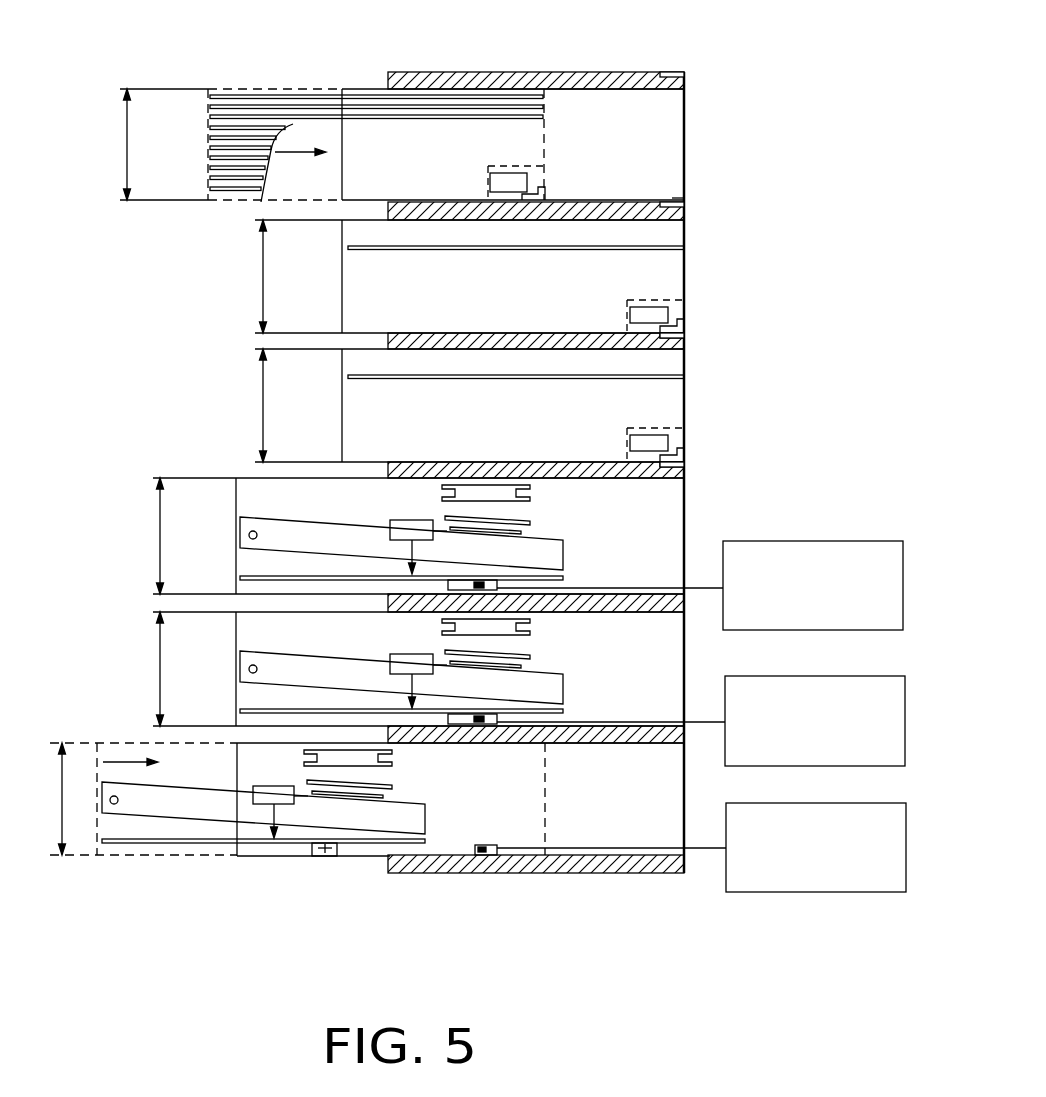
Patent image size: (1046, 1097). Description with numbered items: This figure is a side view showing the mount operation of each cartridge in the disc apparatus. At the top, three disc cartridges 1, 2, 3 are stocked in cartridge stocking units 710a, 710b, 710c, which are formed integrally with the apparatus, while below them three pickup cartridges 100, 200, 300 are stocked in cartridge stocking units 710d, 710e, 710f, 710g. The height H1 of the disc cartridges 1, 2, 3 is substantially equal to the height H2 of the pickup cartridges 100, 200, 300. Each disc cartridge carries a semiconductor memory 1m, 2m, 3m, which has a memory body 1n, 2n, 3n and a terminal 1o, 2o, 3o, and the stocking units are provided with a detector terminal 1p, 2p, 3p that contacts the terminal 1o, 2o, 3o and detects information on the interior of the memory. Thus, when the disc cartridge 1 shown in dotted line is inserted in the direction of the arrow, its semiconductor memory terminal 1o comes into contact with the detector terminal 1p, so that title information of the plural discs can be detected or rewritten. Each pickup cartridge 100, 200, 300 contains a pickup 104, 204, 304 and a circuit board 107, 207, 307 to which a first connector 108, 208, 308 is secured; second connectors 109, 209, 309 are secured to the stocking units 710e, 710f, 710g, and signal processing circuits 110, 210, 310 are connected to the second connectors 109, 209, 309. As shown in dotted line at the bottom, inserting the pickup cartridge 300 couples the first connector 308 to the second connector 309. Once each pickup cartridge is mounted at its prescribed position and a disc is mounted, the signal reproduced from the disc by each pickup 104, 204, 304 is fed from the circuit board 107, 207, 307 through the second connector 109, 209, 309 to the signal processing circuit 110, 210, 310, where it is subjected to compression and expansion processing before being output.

The disc cartridge 1 is at (282, 88).
The memory body 1n is at (492, 182).
The semiconductor memory 1m is at (520, 166).
The terminal 1o is at (545, 188).
The detector terminal 1p is at (672, 200).
The disc cartridge 2 is at (342, 275).
The memory body 2n is at (636, 317).
The semiconductor memory 2m is at (670, 300).
The terminal 2o is at (684, 323).
The detector terminal 2p is at (684, 340).
The disc cartridge 3 is at (342, 400).
The memory body 3n is at (636, 444).
The semiconductor memory 3m is at (670, 428).
The terminal 3o is at (684, 450).
The detector terminal 3p is at (684, 463).
The pickup cartridge 100 is at (237, 527).
The pickup 104 is at (392, 519).
The circuit board 107 is at (306, 578).
The first connector 108 is at (445, 582).
The second connector 109 is at (483, 582).
The signal processing circuit 110 is at (815, 540).
The pickup cartridge 200 is at (237, 659).
The pickup 204 is at (392, 655).
The circuit board 207 is at (306, 710).
The first connector 208 is at (445, 716).
The second connector 209 is at (483, 716).
The signal processing circuit 210 is at (795, 676).
The pickup cartridge 300 is at (160, 857).
The pickup 304 is at (255, 786).
The circuit board 307 is at (170, 839).
The first connector 308 is at (315, 857).
The second connector 309 is at (490, 845).
The signal processing circuit 310 is at (797, 803).
The cartridge stocking unit 710a is at (603, 72).
The cartridge stocking unit 710b is at (545, 222).
The cartridge stocking unit 710c is at (508, 350).
The cartridge stocking unit 710d is at (612, 479).
The cartridge stocking unit 710e is at (612, 613).
The cartridge stocking unit 710f is at (622, 744).
The cartridge stocking unit 710g is at (623, 873).
The height of the disc cartridges H1 is at (175, 275).
The height of the pickup cartridges H2 is at (96, 666).